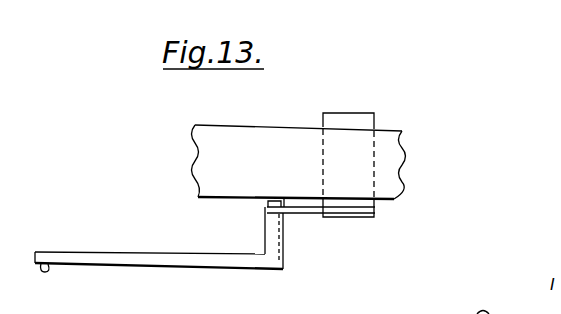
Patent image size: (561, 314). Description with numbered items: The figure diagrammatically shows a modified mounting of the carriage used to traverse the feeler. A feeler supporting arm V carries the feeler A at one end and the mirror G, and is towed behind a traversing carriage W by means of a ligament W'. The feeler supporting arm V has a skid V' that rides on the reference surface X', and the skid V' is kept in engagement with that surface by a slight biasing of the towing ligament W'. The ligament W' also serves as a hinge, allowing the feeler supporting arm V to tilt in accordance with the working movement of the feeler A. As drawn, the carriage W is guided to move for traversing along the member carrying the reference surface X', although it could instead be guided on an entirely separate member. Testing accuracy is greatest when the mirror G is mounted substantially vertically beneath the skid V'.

The reference surface X' is at (299, 173).
The traversing carriage W is at (360, 161).
The towing ligament W' is at (321, 227).
The skid V' is at (259, 210).
The mirror G is at (284, 238).
The feeler supporting arm V is at (159, 251).
The feeler A is at (48, 271).